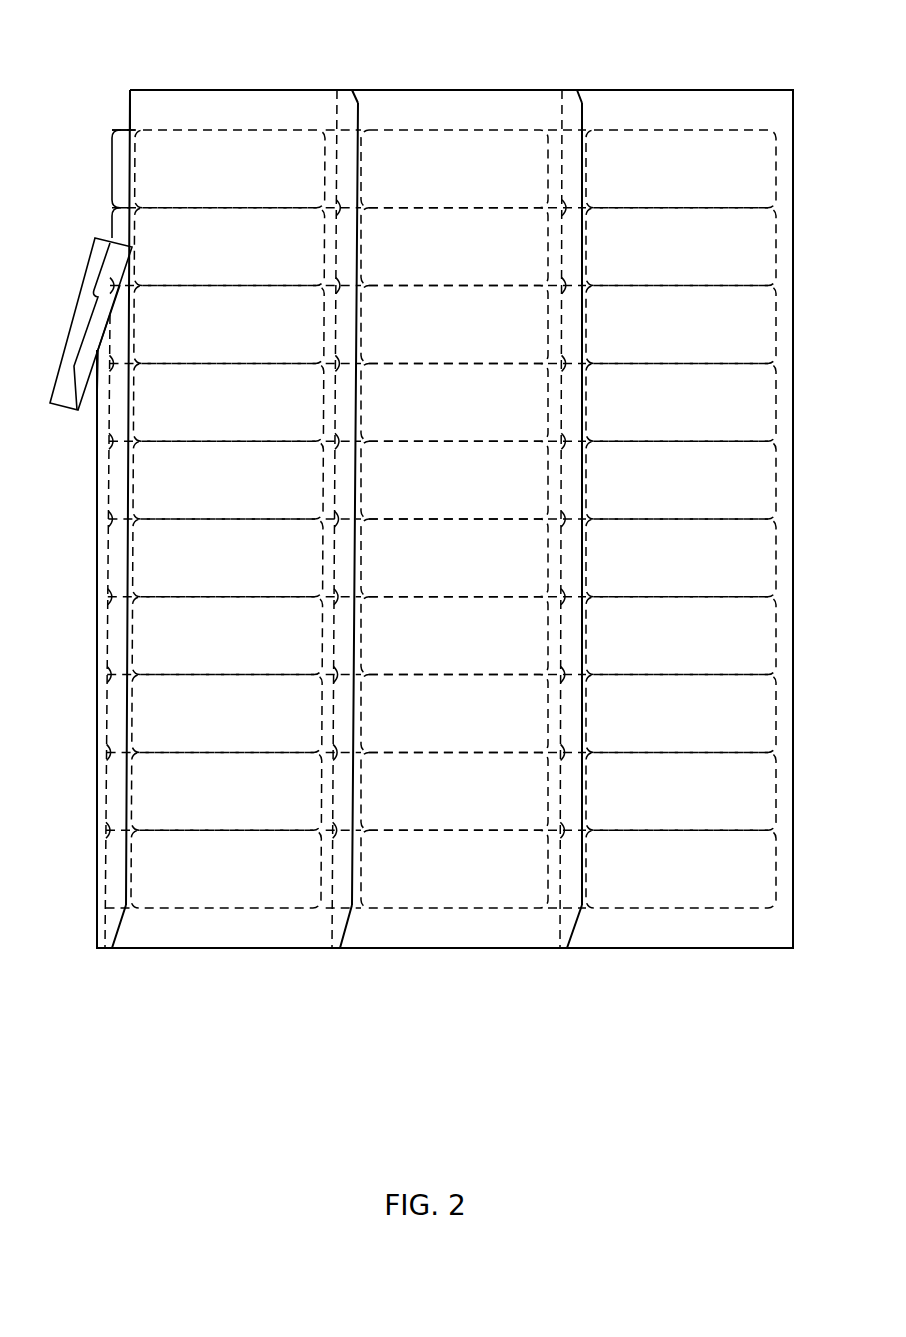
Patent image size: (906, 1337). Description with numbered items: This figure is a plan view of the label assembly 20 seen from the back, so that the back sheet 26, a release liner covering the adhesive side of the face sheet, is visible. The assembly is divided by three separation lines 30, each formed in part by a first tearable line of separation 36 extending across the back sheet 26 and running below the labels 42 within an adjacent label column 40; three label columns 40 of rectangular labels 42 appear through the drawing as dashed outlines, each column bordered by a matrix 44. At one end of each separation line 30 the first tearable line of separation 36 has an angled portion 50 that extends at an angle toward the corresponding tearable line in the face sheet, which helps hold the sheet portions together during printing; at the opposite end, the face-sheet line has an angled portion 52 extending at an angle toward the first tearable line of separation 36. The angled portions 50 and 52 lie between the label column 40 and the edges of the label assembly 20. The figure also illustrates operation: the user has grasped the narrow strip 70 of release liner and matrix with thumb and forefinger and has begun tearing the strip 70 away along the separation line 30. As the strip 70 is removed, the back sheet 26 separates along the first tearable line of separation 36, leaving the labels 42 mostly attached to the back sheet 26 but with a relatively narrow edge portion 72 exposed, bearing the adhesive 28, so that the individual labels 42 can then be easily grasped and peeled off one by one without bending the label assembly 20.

The label assembly 20 is at (289, 1015).
The back sheet 26 is at (700, 107).
The adhesive 28 is at (120, 156).
The separation lines 30 is at (112, 964).
The first tearable line of separation 36 is at (135, 566).
The label columns 40 is at (228, 131).
The labels 42 is at (118, 224).
The matrix 44 is at (117, 132).
The angled portion 50 is at (120, 928).
The angled portion 52 is at (338, 88).
The strip 70 is at (65, 412).
The edge portion 72 is at (122, 145).